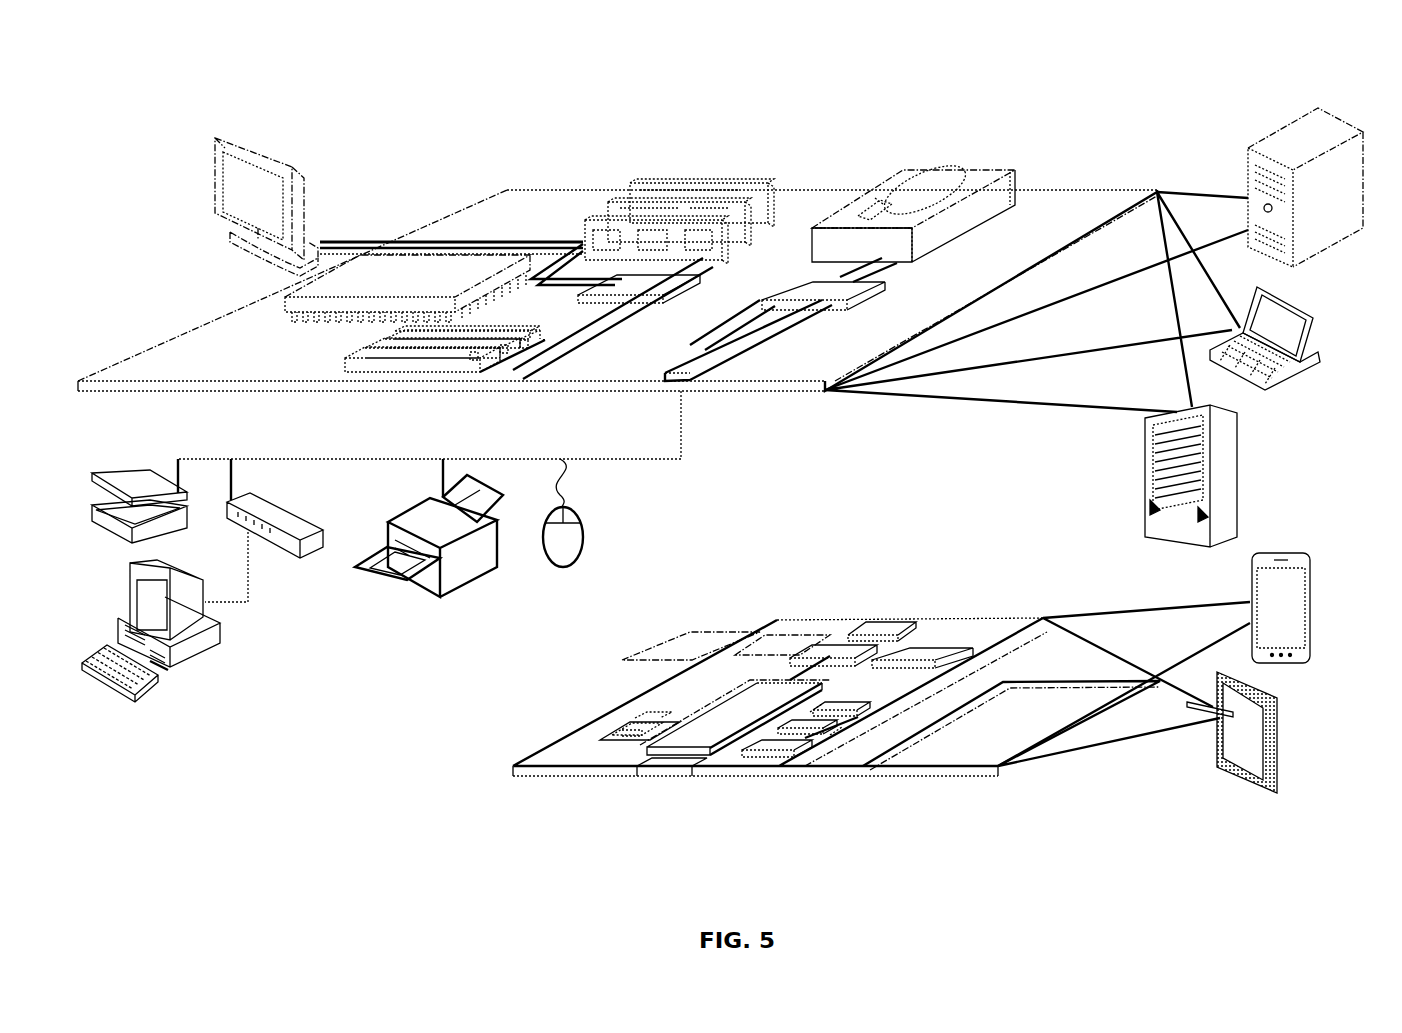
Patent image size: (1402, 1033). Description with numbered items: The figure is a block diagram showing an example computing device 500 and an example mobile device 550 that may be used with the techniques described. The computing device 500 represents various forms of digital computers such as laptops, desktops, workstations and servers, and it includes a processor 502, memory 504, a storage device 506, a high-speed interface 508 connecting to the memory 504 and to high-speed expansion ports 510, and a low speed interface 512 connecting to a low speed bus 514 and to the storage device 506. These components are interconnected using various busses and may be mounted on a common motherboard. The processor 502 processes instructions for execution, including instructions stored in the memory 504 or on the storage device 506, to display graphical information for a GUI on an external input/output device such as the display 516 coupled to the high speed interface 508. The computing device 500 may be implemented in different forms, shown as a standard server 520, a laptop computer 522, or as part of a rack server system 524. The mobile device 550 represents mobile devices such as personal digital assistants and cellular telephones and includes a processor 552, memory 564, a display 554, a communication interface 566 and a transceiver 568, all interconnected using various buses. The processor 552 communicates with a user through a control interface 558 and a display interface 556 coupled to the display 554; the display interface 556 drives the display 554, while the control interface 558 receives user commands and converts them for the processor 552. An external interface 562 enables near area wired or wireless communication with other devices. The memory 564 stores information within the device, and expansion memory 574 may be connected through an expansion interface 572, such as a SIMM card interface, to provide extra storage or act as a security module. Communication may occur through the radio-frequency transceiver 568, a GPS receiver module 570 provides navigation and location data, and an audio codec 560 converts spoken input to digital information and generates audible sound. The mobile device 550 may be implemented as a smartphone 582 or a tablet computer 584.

The computing device 500 is at (316, 88).
The processor 502 is at (285, 305).
The memory 504 is at (655, 186).
The storage device 506 is at (905, 174).
The high-speed interface 508 is at (616, 290).
The high-speed expansion ports 510 is at (350, 357).
The low speed interface 512 is at (810, 292).
The low speed bus 514 is at (692, 381).
The display 516 is at (218, 144).
The standard server 520 is at (1240, 156).
The laptop computer 522 is at (1320, 323).
The rack server system 524 is at (1150, 502).
The mobile device 550 is at (482, 782).
The processor 552 is at (705, 745).
The display 554 is at (960, 755).
The display interface 556 is at (792, 762).
The control interface 558 is at (815, 740).
The audio codec 560 is at (845, 733).
The external interface 562 is at (667, 768).
The memory 564 is at (612, 734).
The communication interface 566 is at (833, 656).
The transceiver 568 is at (905, 655).
The GPS receiver module 570 is at (896, 634).
The expansion interface 572 is at (758, 634).
The expansion memory 574 is at (682, 634).
The smartphone 582 is at (1310, 588).
The tablet computer 584 is at (1224, 782).